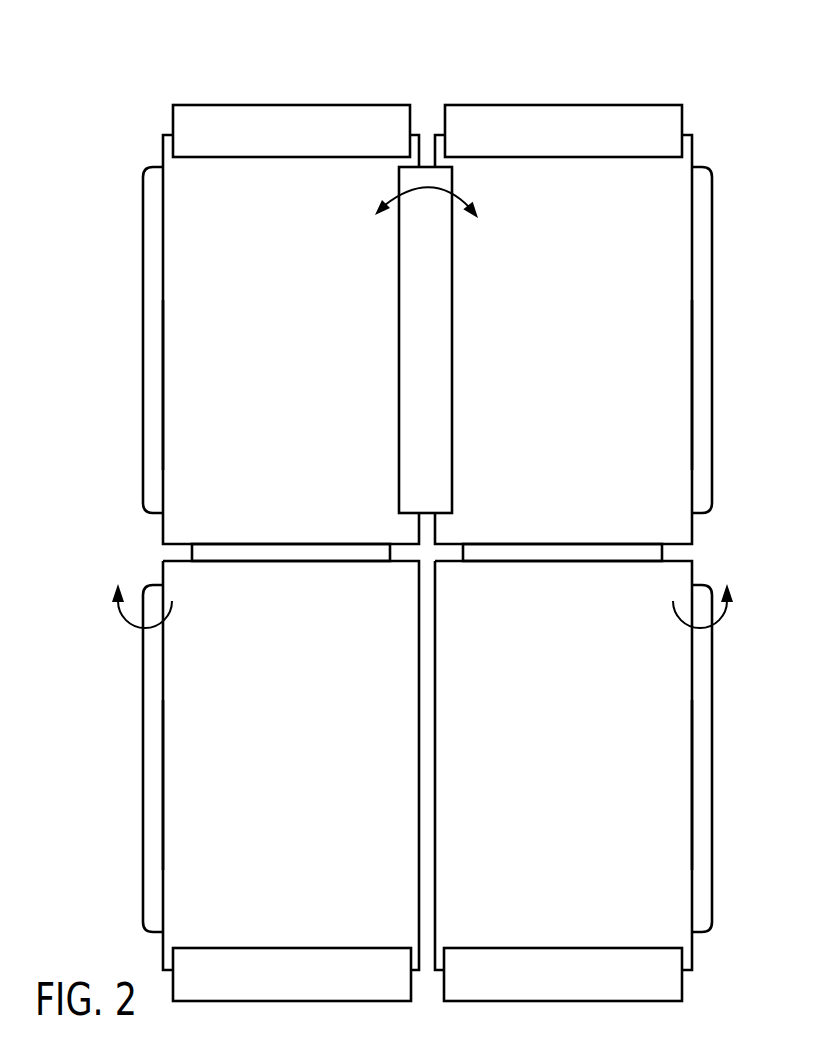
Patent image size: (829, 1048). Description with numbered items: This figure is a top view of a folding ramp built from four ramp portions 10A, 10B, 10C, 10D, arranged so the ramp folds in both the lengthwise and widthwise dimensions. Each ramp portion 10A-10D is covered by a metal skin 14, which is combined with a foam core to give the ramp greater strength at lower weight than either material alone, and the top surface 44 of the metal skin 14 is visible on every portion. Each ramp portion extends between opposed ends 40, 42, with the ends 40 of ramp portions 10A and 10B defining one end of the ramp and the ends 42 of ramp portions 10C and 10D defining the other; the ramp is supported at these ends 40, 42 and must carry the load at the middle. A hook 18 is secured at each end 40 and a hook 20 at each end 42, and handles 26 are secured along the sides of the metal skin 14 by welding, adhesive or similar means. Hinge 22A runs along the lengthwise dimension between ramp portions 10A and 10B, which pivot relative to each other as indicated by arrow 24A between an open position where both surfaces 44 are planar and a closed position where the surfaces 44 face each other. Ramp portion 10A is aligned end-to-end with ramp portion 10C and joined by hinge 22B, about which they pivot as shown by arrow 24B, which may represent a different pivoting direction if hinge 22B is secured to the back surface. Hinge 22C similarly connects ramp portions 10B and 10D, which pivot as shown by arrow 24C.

The ramp portion 10A is at (178, 225).
The ramp portion 10B is at (657, 233).
The ramp portion 10C is at (178, 883).
The ramp portion 10D is at (657, 832).
The metal skin 14 is at (162, 385).
The hook 18 is at (303, 144).
The hook 20 is at (303, 986).
The hinge 22A is at (439, 273).
The hinge 22B is at (192, 557).
The hinge 22C is at (663, 557).
The arrow 24A is at (437, 190).
The arrow 24B is at (122, 618).
The arrow 24C is at (722, 618).
The handle 26 is at (143, 272).
The end 40 is at (330, 80).
The end 42 is at (230, 525).
The top surface 44 is at (304, 353).